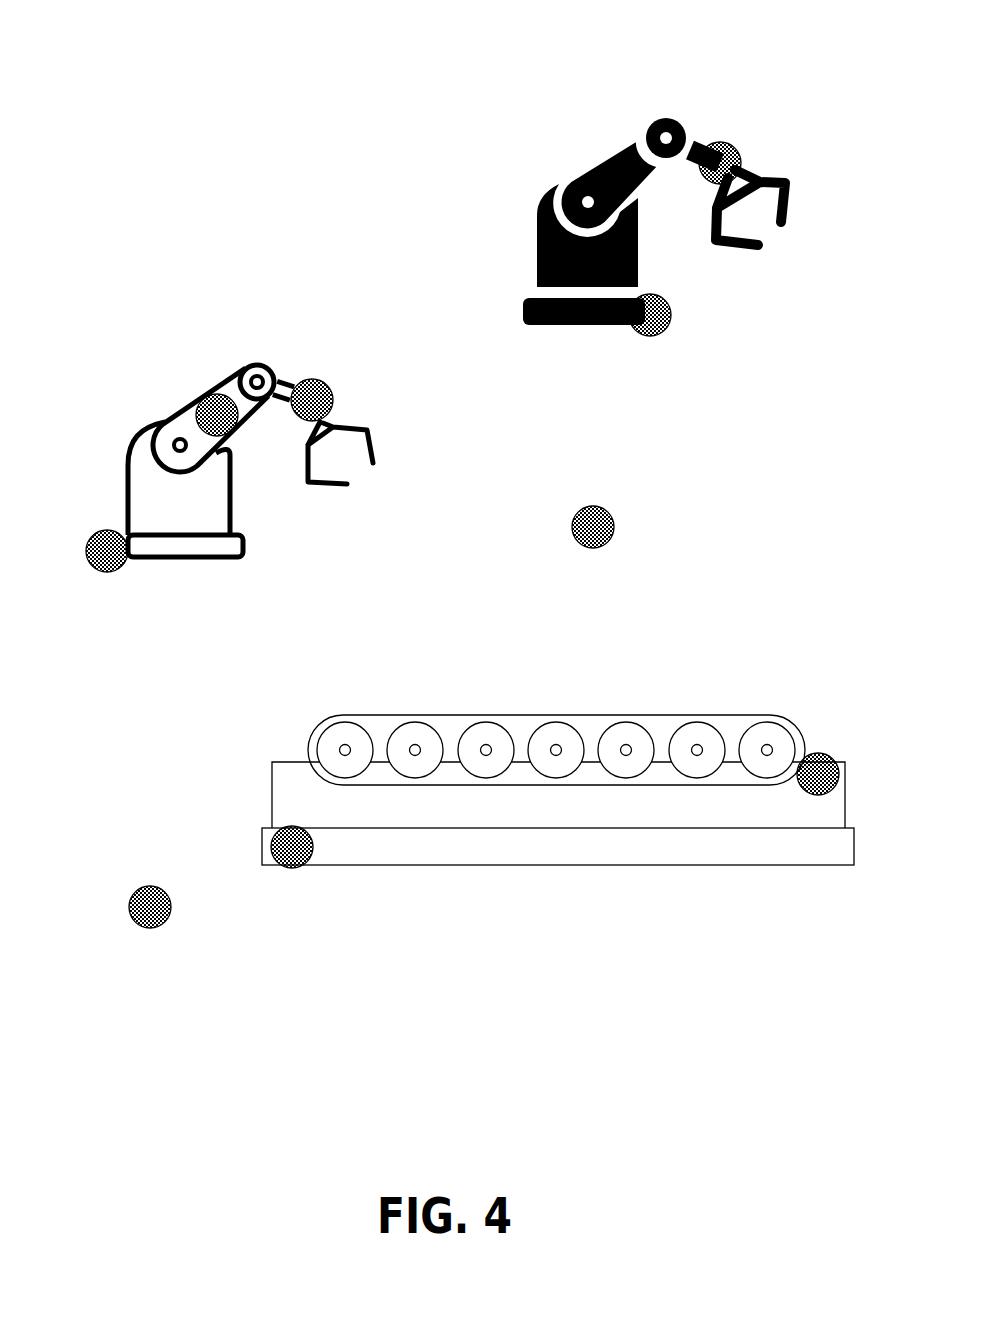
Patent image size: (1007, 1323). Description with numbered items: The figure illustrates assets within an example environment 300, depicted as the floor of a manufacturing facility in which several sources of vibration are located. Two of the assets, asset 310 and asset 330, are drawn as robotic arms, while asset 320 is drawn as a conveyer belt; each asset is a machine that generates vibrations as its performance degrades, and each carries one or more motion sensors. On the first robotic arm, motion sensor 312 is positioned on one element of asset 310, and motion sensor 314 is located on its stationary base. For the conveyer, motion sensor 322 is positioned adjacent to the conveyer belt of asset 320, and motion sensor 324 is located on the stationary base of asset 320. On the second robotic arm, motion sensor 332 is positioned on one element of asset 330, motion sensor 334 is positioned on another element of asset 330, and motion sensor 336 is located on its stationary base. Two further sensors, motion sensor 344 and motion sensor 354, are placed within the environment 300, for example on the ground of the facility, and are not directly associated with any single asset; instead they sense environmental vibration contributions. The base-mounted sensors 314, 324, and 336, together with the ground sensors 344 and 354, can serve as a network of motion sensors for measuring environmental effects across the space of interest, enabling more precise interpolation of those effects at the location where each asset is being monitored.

The environment 300 is at (102, 80).
The asset 310 is at (526, 202).
The motion sensor 312 is at (741, 134).
The motion sensor 314 is at (679, 340).
The asset 320 is at (428, 687).
The motion sensor 322 is at (836, 744).
The motion sensor 324 is at (263, 844).
The asset 330 is at (117, 427).
The motion sensor 332 is at (191, 397).
The motion sensor 334 is at (334, 359).
The motion sensor 336 is at (80, 540).
The motion sensor 344 is at (622, 550).
The motion sensor 354 is at (179, 930).